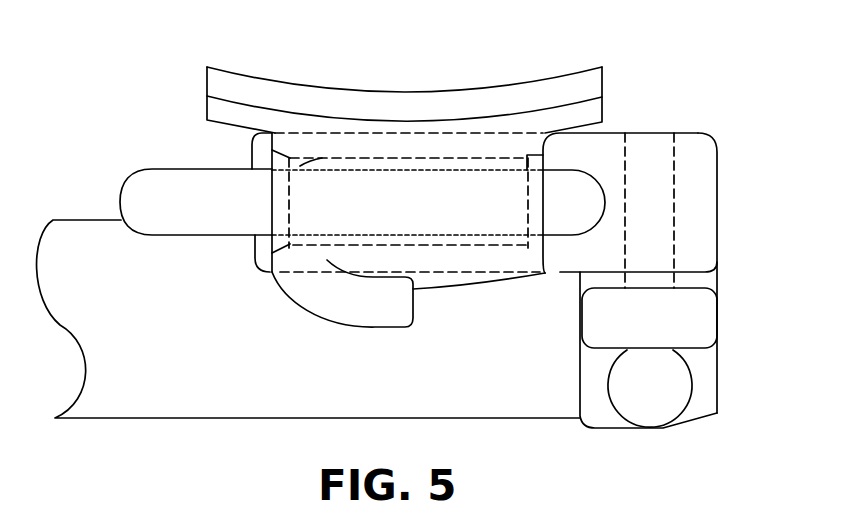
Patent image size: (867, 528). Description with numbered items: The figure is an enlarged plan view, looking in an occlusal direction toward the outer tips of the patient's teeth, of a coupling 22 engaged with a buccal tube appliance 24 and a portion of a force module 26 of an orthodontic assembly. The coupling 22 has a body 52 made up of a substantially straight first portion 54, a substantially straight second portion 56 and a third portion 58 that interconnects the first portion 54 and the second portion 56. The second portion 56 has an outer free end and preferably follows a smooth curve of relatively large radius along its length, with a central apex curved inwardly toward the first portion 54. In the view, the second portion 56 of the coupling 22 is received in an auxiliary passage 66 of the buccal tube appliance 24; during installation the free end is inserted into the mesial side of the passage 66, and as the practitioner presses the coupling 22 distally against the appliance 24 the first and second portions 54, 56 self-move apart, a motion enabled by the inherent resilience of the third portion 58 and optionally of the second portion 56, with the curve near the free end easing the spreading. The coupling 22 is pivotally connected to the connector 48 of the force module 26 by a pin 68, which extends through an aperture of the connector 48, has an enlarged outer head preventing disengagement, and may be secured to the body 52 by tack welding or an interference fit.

The coupling 22 is at (726, 134).
The buccal tube appliance 24 is at (197, 87).
The force module 26 is at (131, 428).
The connector 48 is at (703, 365).
The body 52 is at (682, 122).
The first portion 54 is at (600, 144).
The second portion 56 is at (396, 190).
The third portion 58 is at (118, 202).
The auxiliary passage 66 is at (250, 163).
The pin 68 is at (650, 281).